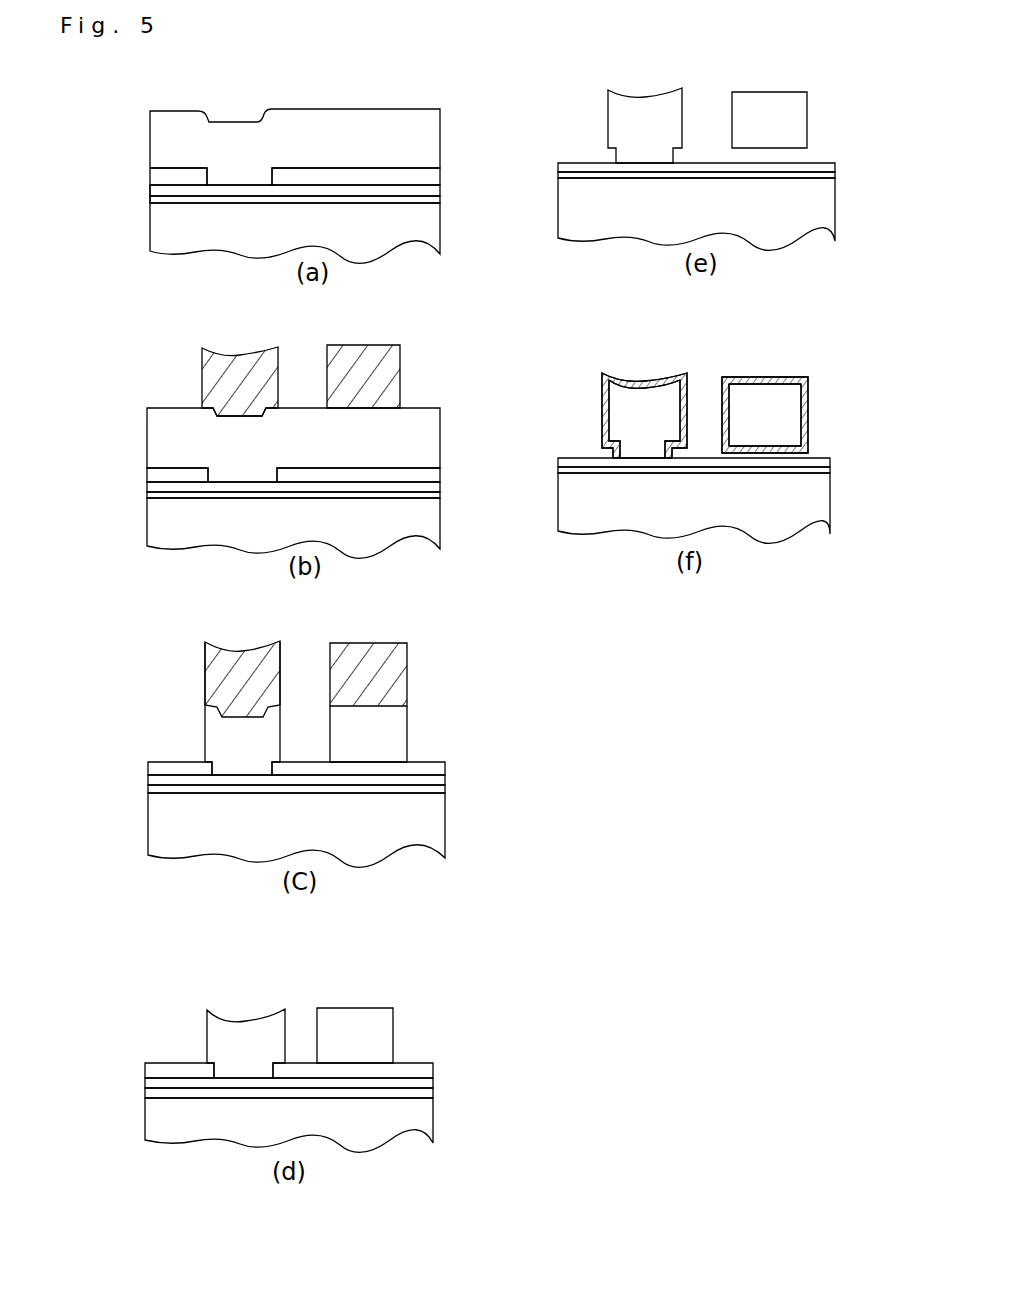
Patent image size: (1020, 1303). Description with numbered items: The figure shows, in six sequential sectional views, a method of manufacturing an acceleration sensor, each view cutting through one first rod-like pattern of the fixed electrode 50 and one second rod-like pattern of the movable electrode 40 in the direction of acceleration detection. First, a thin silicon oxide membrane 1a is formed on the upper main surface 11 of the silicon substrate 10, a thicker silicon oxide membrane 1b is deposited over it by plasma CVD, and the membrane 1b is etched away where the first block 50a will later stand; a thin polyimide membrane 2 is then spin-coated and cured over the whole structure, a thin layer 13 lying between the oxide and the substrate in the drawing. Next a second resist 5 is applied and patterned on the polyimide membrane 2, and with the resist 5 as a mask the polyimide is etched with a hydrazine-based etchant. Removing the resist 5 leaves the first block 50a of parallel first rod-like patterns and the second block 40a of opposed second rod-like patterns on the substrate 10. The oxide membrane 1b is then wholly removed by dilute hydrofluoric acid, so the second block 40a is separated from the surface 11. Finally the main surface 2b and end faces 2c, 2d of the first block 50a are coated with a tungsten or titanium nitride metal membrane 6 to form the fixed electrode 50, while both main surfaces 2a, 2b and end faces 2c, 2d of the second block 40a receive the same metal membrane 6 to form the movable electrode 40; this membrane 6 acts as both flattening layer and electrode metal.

The silicon substrate 10 is at (437, 236).
The insulating layer 13 is at (436, 201).
The silicon oxide membrane 1a is at (437, 191).
The silicon oxide membrane 1b is at (436, 178).
The thin polyimide membrane 2 is at (495, 564).
The upper main surface 11 is at (170, 201).
The second resist 5 is at (245, 351).
The first block 50a is at (245, 1018).
The second block 40a is at (352, 1008).
The fixed electrode 50 is at (640, 373).
The movable electrode 40 is at (773, 375).
The metal membrane 6 is at (728, 377).
The main surface 2a is at (641, 458).
The main surface 2b is at (639, 389).
The end face 2c is at (605, 427).
The end face 2d is at (683, 423).